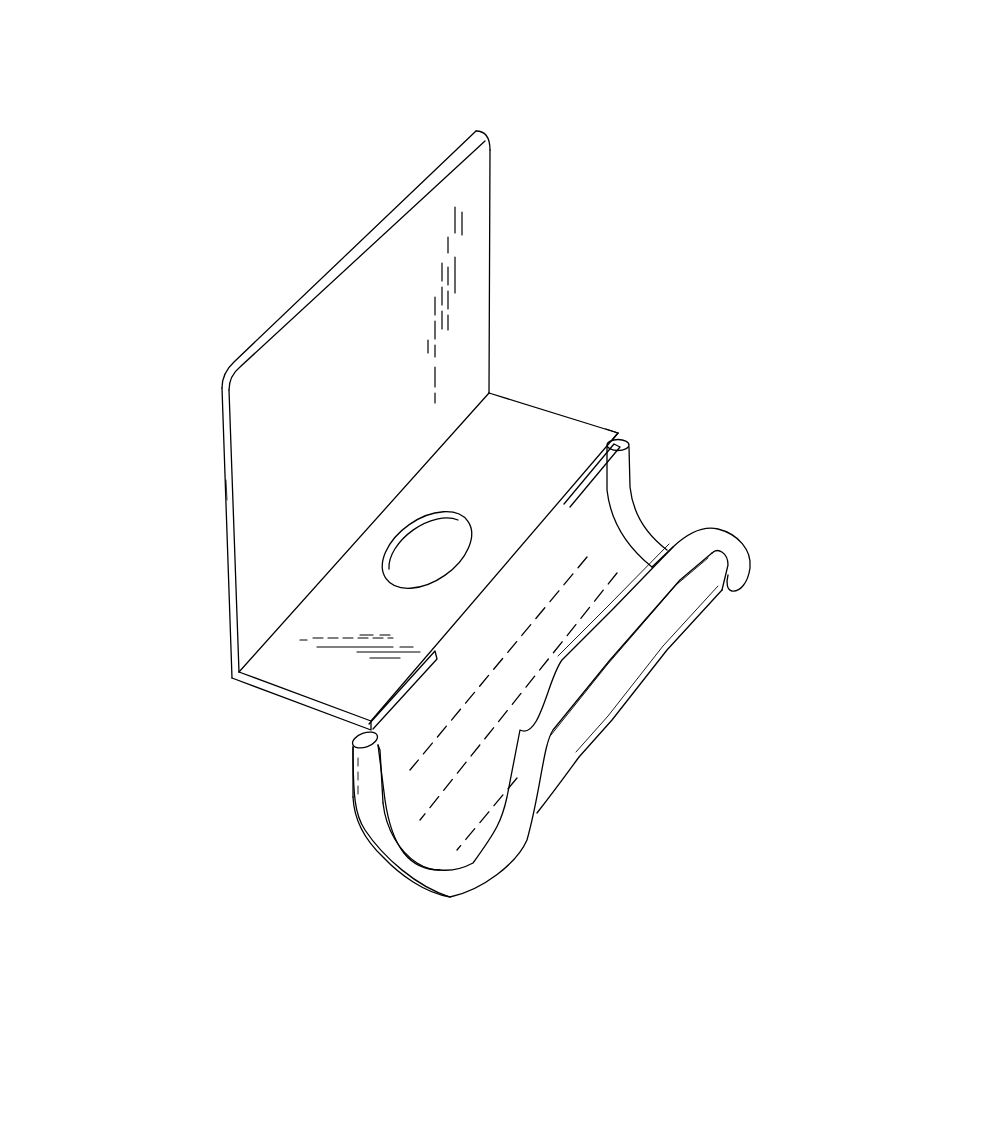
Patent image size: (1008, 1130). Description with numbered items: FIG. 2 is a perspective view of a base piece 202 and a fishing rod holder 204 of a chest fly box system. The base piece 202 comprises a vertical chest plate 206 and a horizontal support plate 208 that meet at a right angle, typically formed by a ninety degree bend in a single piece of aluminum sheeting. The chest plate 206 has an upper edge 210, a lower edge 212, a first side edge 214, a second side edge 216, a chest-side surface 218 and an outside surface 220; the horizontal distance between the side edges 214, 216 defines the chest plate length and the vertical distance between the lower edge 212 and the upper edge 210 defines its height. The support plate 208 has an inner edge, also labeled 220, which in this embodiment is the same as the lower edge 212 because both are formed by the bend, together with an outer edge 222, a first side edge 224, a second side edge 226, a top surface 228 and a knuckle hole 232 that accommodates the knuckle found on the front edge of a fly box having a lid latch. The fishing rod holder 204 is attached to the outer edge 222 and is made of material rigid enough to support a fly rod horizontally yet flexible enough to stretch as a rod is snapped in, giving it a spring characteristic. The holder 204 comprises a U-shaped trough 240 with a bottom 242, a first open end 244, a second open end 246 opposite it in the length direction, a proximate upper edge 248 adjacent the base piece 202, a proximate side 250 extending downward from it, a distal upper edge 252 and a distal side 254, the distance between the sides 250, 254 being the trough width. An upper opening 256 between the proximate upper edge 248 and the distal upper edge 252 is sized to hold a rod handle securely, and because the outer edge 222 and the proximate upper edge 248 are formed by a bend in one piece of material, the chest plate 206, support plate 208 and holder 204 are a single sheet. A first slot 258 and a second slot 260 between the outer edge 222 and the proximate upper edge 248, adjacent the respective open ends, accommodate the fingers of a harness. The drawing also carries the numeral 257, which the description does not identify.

The base piece 202 is at (366, 98).
The fishing rod holder 204 is at (813, 547).
The vertical chest plate 206 is at (490, 153).
The horizontal support plate 208 is at (510, 420).
The upper edge 210 is at (384, 220).
The lower edge 212 is at (270, 650).
The first side edge 214 is at (490, 228).
The second side edge 216 is at (223, 470).
The chest-side surface 218 is at (200, 550).
The outside surface 220 is at (527, 312).
The outer edge 222 is at (548, 497).
The first side edge 224 is at (622, 440).
The second side edge 226 is at (317, 712).
The top surface 228 is at (342, 614).
The knuckle hole 232 is at (430, 510).
The U-shaped trough 240 is at (687, 487).
The bottom 242 is at (572, 802).
The first open end 244 is at (690, 523).
The second open end 246 is at (387, 920).
The proximate upper edge 248 is at (473, 606).
The proximate side 250 is at (513, 597).
The distal upper edge 252 is at (657, 598).
The distal side 254 is at (632, 677).
The upper opening 256 is at (350, 842).
The lower bend 257 is at (483, 877).
The first slot 258 is at (592, 494).
The second slot 260 is at (405, 700).